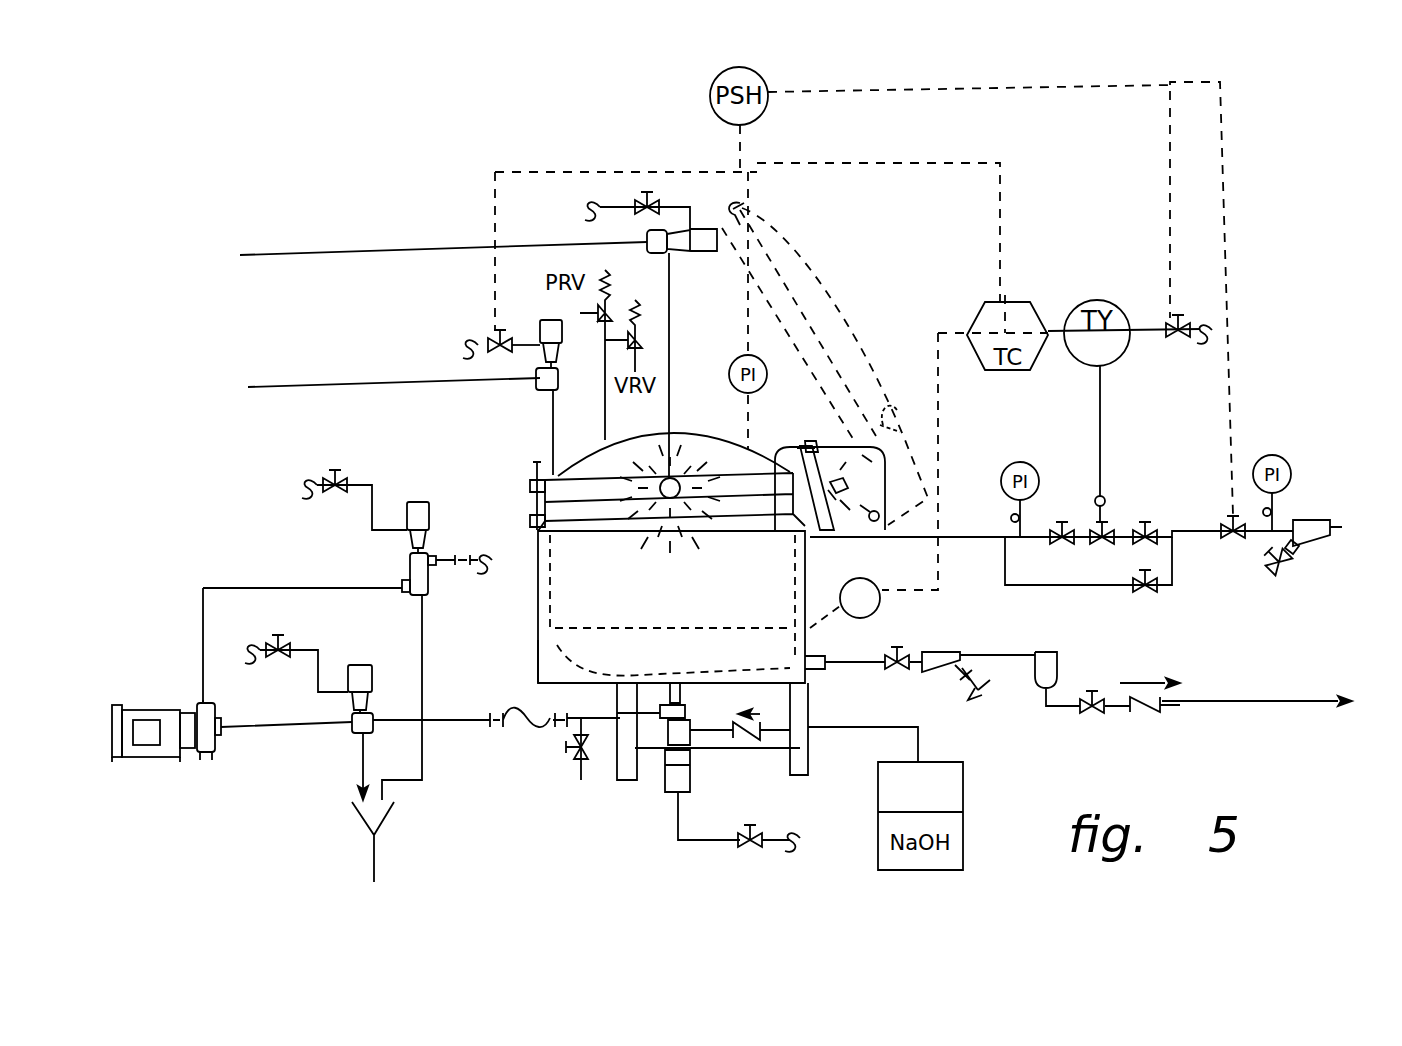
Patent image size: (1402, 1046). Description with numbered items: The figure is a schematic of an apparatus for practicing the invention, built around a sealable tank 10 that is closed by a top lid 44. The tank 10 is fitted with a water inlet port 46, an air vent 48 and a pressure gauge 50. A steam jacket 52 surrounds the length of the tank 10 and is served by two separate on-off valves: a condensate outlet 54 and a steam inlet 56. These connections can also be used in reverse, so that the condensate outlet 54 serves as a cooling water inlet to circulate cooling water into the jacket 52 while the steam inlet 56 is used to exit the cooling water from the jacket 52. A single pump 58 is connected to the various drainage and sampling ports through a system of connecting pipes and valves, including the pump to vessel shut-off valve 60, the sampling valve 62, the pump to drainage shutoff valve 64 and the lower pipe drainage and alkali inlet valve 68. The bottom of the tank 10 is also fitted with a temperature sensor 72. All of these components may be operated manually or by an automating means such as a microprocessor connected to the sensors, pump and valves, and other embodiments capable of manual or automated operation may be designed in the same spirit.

The sealable tank 10 is at (567, 578).
The top lid 44 is at (574, 470).
The water inlet port 46 is at (222, 244).
The air vent 48 is at (226, 375).
The pressure gauge 50 is at (730, 376).
The steam jacket 52 is at (548, 672).
The condensate outlet 54 is at (1109, 682).
The steam inlet 56 is at (1357, 517).
The pump 58 is at (152, 680).
The pump to vessel shut-off valve 60 is at (390, 570).
The sampling valve 62 is at (562, 752).
The pump to drainage shutoff valve 64 is at (340, 741).
The lower pipe drainage and alkali inlet valve 68 is at (692, 721).
The temperature sensor 72 is at (860, 578).